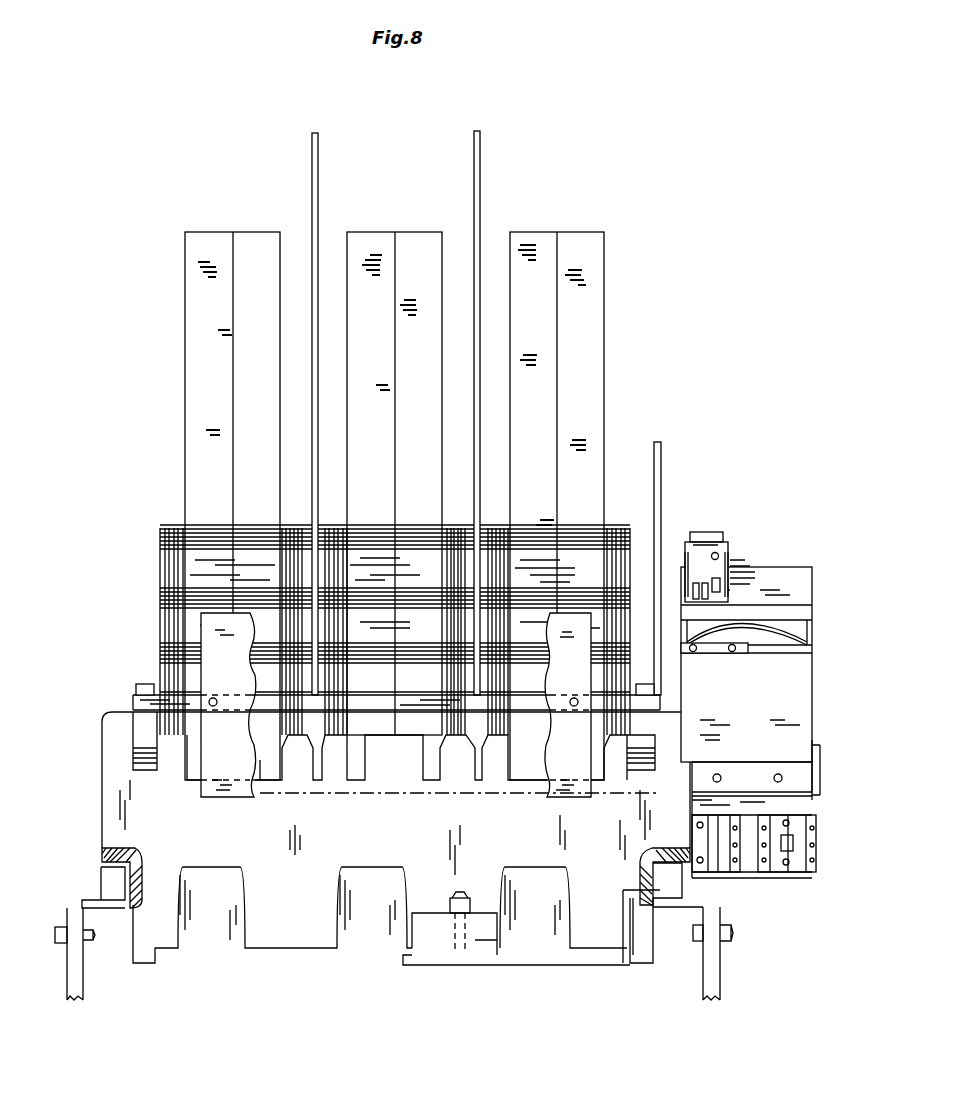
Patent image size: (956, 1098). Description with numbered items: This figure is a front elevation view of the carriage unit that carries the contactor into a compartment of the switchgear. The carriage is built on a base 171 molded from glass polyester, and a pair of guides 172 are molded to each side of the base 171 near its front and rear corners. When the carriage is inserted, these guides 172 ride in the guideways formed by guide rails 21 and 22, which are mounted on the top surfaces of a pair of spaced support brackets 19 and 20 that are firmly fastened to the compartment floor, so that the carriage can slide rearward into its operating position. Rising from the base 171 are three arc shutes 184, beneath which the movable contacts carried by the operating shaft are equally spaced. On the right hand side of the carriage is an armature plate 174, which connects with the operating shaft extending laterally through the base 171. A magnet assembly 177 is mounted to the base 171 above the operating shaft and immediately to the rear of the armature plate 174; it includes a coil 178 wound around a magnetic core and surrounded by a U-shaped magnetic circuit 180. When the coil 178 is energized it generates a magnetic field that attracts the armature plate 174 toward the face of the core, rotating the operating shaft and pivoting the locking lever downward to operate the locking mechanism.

The arc shutes 184 is at (205, 265).
The base 171 is at (400, 840).
The guides 172 is at (112, 882).
The armature plate 174 is at (770, 718).
The magnet assembly 177 is at (781, 560).
The coil 178 is at (770, 637).
The U-shaped magnetic circuit 180 is at (800, 583).
The support bracket 19 is at (90, 912).
The support bracket 20 is at (700, 955).
The guide rail 21 is at (100, 862).
The guide rail 22 is at (688, 885).